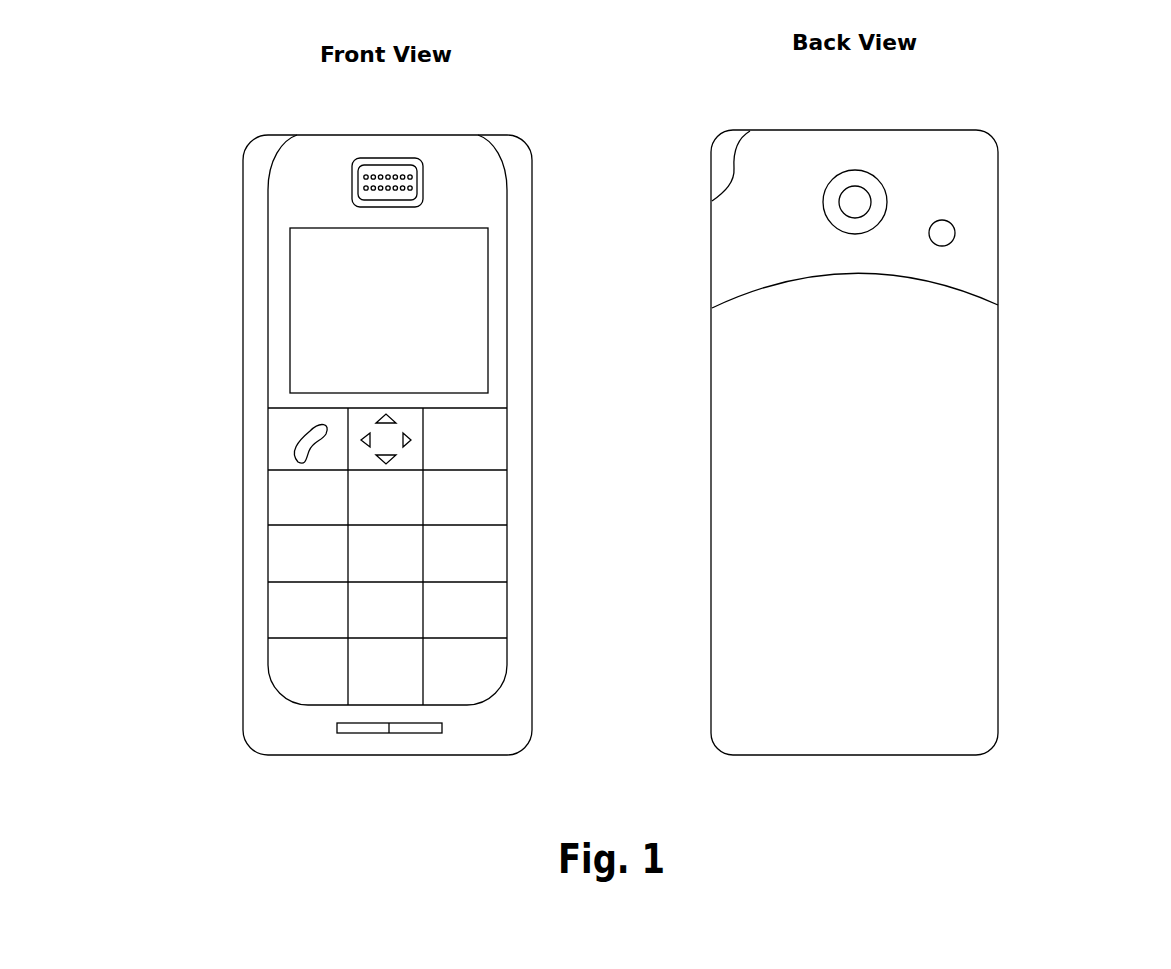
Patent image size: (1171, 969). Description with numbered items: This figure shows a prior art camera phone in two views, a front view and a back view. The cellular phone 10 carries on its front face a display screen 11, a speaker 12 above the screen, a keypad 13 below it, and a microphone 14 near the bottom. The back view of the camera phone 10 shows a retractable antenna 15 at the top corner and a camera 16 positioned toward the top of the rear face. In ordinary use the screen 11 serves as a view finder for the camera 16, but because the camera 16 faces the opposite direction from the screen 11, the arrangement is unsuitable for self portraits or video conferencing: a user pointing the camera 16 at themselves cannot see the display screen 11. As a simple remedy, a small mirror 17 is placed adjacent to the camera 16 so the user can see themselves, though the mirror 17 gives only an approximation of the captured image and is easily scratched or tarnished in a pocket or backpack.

The cellular phone 10 is at (127, 232).
The display screen 11 is at (307, 343).
The speaker 12 is at (362, 170).
The keypad 13 is at (283, 617).
The microphone 14 is at (389, 734).
The retractable antenna 15 is at (722, 158).
The camera 16 is at (880, 203).
The mirror 17 is at (955, 233).